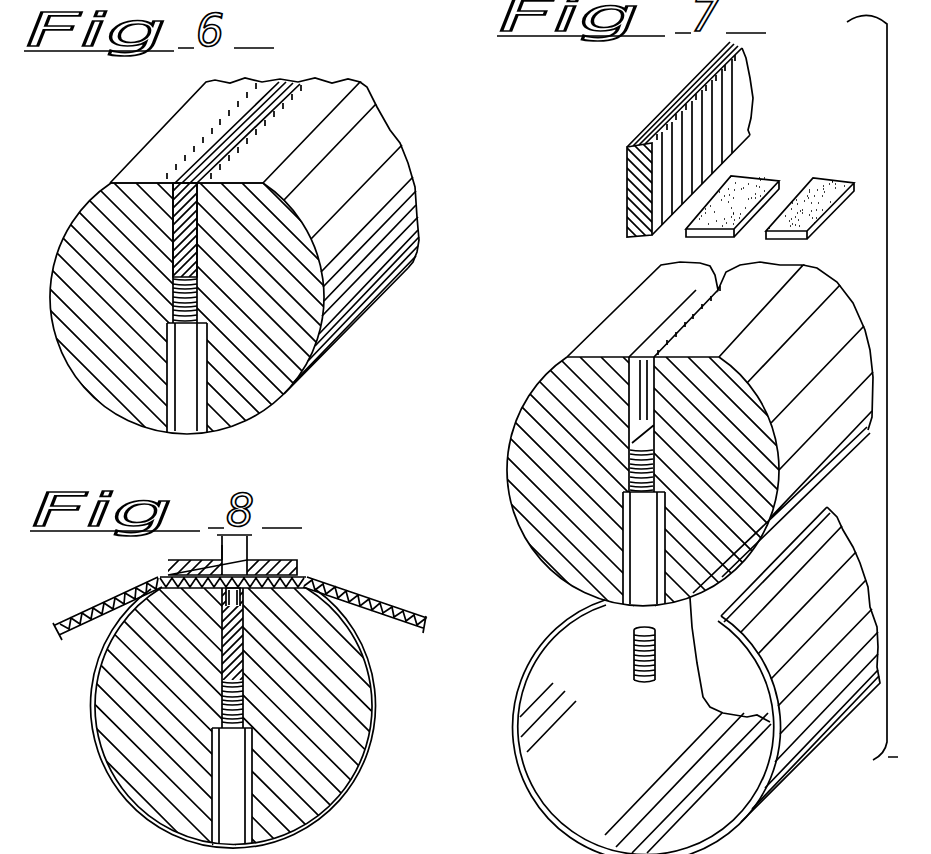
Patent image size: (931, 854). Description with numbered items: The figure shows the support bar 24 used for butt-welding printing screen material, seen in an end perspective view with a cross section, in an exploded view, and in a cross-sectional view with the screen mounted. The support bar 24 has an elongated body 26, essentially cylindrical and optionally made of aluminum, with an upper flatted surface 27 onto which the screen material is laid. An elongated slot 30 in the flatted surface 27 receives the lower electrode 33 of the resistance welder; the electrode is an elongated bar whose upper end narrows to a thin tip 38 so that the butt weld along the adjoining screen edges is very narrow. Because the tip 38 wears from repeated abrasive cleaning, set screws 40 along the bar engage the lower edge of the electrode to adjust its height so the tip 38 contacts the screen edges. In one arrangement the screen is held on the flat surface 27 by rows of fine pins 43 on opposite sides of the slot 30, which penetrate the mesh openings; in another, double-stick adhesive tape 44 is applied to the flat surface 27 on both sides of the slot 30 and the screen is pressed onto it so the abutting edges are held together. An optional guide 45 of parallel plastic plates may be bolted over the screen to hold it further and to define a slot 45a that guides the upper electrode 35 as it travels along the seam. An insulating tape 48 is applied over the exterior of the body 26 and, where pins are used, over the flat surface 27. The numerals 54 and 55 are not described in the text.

In FIG. 6, the support bar 24 is at (84, 208).
In FIG. 7, the support bar 24 is at (585, 302).
In FIG. 8, the support bar 24 is at (385, 742).
In FIG. 6, the body 26 is at (270, 388).
In FIG. 7, the body 26 is at (540, 530).
In FIG. 8, the body 26 is at (127, 745).
In FIG. 6, the upper flatted surface 27 is at (327, 92).
In FIG. 7, the upper flatted surface 27 is at (745, 292).
In FIG. 6, the slot 30 is at (190, 238).
In FIG. 7, the slot 30 is at (640, 378).
In FIG. 8, the slot 30 is at (240, 618).
In FIG. 6, the lower electrode 33 is at (171, 237).
In FIG. 7, the lower electrode 33 is at (627, 192).
In FIG. 8, the lower electrode 33 is at (222, 638).
In FIG. 8, the upper electrode 35 is at (250, 545).
In FIG. 6, the tip 38 is at (190, 175).
In FIG. 7, the tip 38 is at (670, 108).
In FIG. 8, the tip 38 is at (297, 575).
In FIG. 7, the set screws 40 is at (640, 678).
In FIG. 8, the set screws 40 is at (242, 703).
In FIG. 6, the pins 43 is at (275, 88).
In FIG. 7, the double-stick adhesive tape 44 is at (752, 182).
In FIG. 8, the double-stick adhesive tape 44 is at (190, 592).
In FIG. 8, the guide 45 is at (297, 558).
In FIG. 8, the slot 45a is at (220, 552).
In FIG. 7, the insulating tape 48 is at (745, 838).
In FIG. 8, the insulating tape 48 is at (367, 656).
In FIG. 7, the member 54 is at (468, 853).
In FIG. 7, the member 55 is at (523, 853).